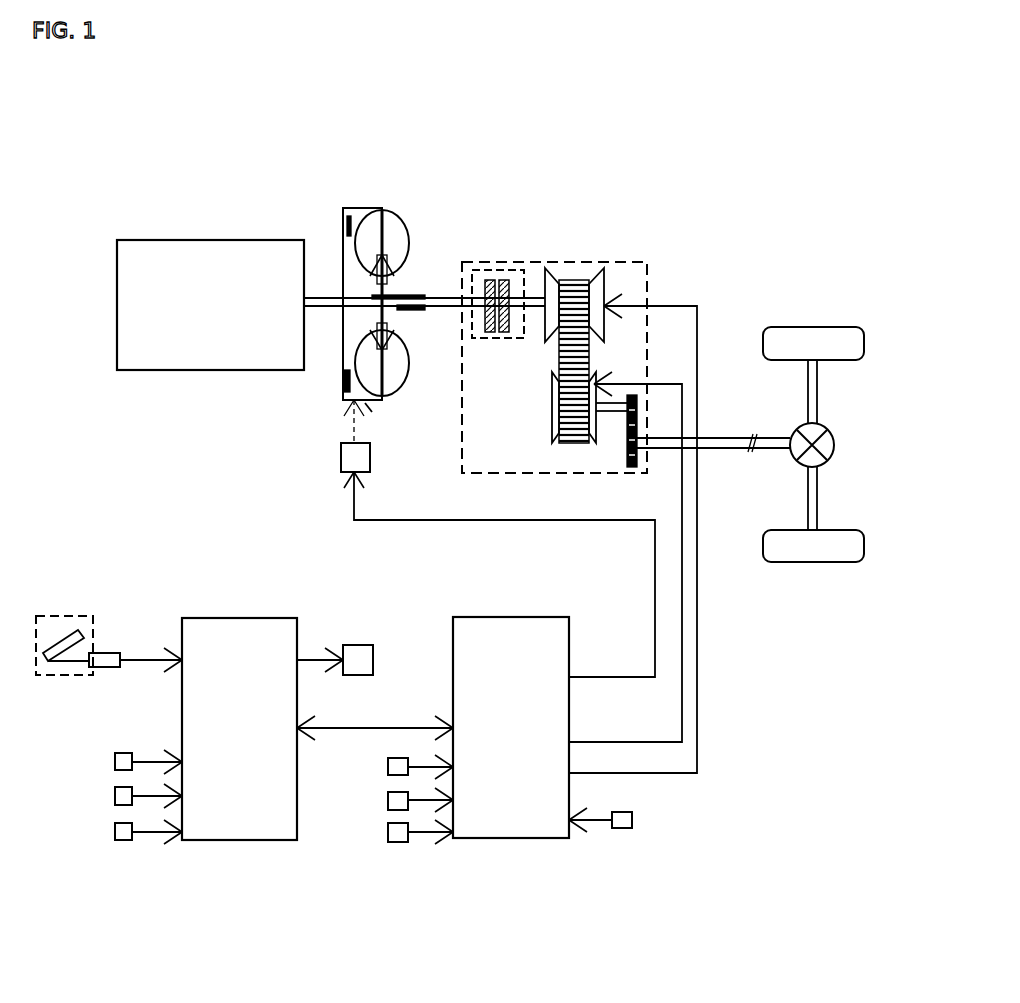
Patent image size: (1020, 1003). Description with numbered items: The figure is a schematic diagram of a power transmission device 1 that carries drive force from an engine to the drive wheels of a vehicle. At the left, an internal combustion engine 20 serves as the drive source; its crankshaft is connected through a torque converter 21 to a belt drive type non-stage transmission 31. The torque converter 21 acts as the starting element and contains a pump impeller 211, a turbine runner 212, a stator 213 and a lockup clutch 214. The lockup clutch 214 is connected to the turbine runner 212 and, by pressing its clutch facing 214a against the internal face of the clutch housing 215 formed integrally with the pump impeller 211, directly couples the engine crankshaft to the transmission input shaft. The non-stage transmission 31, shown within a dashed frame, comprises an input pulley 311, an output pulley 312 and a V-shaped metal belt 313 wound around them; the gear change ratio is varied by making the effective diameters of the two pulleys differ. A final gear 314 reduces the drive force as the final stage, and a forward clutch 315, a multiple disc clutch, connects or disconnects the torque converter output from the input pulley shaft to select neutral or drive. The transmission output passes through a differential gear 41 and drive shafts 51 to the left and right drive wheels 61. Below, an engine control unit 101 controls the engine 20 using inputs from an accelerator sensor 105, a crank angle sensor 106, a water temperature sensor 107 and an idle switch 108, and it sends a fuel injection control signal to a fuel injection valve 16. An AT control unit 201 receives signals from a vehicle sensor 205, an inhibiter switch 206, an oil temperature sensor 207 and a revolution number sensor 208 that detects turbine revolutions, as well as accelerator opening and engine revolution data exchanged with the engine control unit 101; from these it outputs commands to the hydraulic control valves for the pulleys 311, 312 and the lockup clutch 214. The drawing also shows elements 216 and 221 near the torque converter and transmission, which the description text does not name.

The power transmission device 1 is at (583, 184).
The internal combustion engine 20 is at (262, 240).
The torque converter 21 is at (376, 305).
The pump impeller 211 is at (410, 243).
The turbine runner 212 is at (372, 210).
The stator 213 is at (395, 279).
The lockup clutch 214 is at (342, 372).
The clutch facing 214a is at (346, 396).
The clutch housing 215 is at (346, 218).
The lock-up clutch hydraulic chamber 216 is at (366, 402).
The lock-up solenoid valve 221 is at (341, 460).
The belt drive type non-stage transmission 31 is at (556, 358).
The input pulley 311 is at (608, 276).
The output pulley 312 is at (553, 424).
The V-shaped metal belt 313 is at (558, 350).
The final gear 314 is at (627, 460).
The forward clutch 315 is at (508, 270).
The differential gear 41 is at (834, 438).
The drive shafts 51 is at (818, 392).
The drive wheels 61 is at (864, 333).
The engine control unit 101 is at (262, 618).
The accelerator sensor 105 is at (110, 667).
The crank angle sensor 106 is at (115, 760).
The water temperature sensor 107 is at (115, 794).
The idle switch 108 is at (115, 829).
The fuel injection valve 16 is at (365, 645).
The AT control unit 201 is at (532, 617).
The vehicle sensor 205 is at (388, 766).
The inhibiter switch 206 is at (388, 800).
The oil temperature sensor 207 is at (388, 832).
The revolution number sensor 208 is at (632, 820).